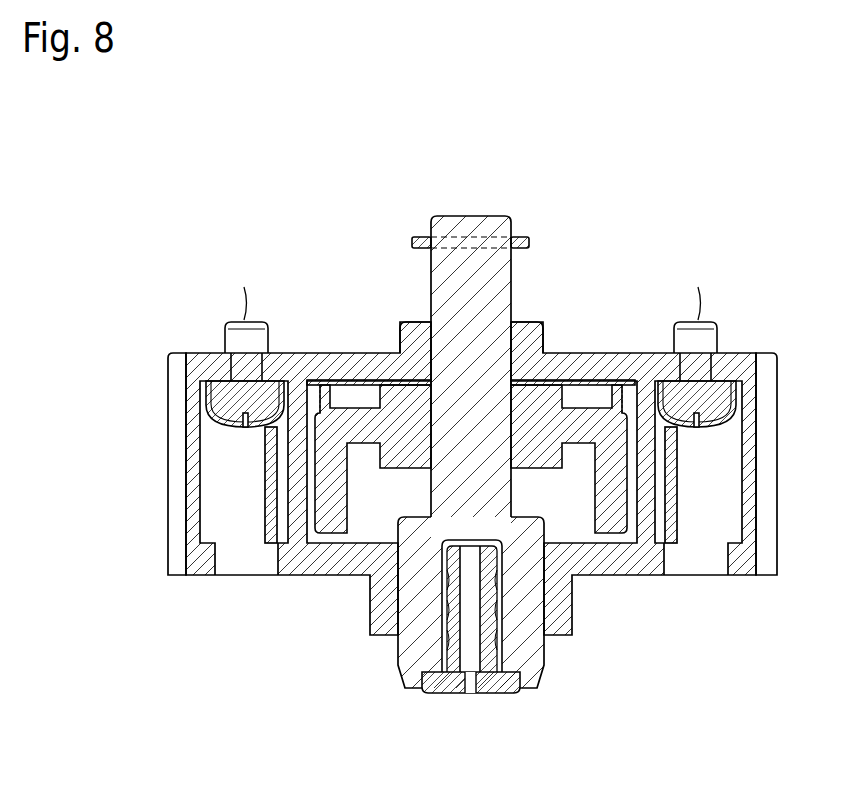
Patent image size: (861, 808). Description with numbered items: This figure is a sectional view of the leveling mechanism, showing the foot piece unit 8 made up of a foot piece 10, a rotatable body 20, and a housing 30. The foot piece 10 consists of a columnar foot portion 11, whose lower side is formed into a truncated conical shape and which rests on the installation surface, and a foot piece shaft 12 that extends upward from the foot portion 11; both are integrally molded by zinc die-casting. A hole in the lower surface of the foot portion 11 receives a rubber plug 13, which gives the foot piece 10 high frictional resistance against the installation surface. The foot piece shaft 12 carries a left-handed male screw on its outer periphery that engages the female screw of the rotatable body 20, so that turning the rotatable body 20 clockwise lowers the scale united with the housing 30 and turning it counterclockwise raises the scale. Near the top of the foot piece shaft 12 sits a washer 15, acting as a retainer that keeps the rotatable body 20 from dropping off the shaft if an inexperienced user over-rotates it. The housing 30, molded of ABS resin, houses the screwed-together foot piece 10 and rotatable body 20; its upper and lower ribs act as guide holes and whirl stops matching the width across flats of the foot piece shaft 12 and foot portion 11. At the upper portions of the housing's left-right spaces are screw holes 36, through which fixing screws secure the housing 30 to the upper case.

The foot piece unit 8 is at (232, 157).
The foot piece 10 is at (394, 674).
The foot portion 11 is at (536, 658).
The foot piece shaft 12 is at (440, 283).
The rubber plug 13 is at (491, 693).
The washer 15 is at (414, 240).
The rotatable body 20 is at (313, 483).
The housing 30 is at (176, 450).
The screw holes 36 is at (242, 372).